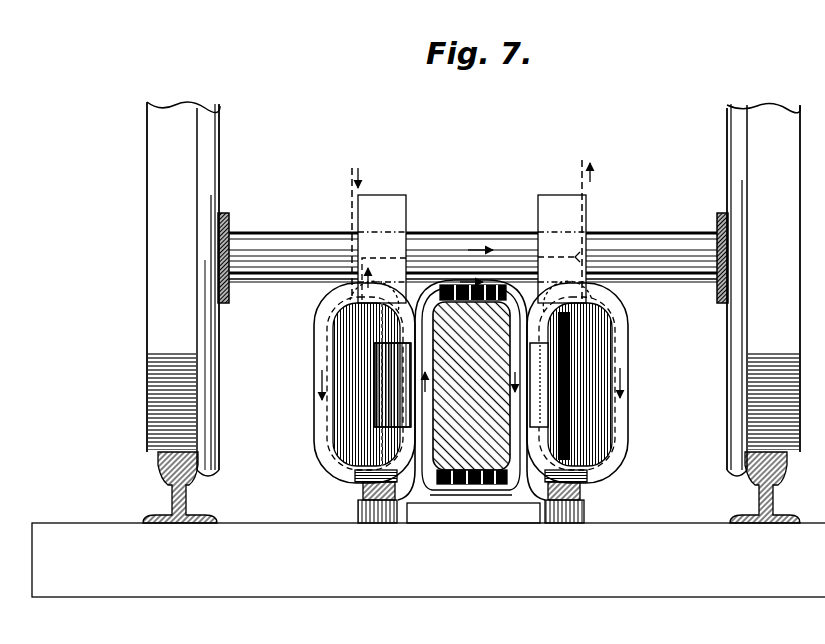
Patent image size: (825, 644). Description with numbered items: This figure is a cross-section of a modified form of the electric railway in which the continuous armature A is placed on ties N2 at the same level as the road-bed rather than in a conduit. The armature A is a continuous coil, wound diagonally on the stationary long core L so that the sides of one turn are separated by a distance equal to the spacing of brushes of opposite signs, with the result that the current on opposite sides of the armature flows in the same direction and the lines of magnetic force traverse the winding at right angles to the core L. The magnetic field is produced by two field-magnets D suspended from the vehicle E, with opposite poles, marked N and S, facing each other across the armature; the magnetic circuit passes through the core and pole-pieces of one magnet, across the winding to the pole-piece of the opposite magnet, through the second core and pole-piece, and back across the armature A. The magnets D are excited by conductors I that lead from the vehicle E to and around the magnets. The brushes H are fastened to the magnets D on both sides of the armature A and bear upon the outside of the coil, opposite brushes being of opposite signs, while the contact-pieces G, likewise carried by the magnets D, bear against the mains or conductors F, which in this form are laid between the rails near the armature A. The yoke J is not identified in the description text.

The vehicle E is at (481, 312).
The conductors I is at (459, 226).
The field magnet yokes J is at (314, 428).
The field-magnet D is at (335, 362).
The brushes H is at (461, 385).
The contact-pieces G is at (472, 401).
The armature A is at (440, 291).
The core L is at (471, 386).
The mains or conductors F is at (365, 497).
The ties N2 is at (428, 560).
The north pole N is at (366, 373).
The south pole S is at (577, 373).